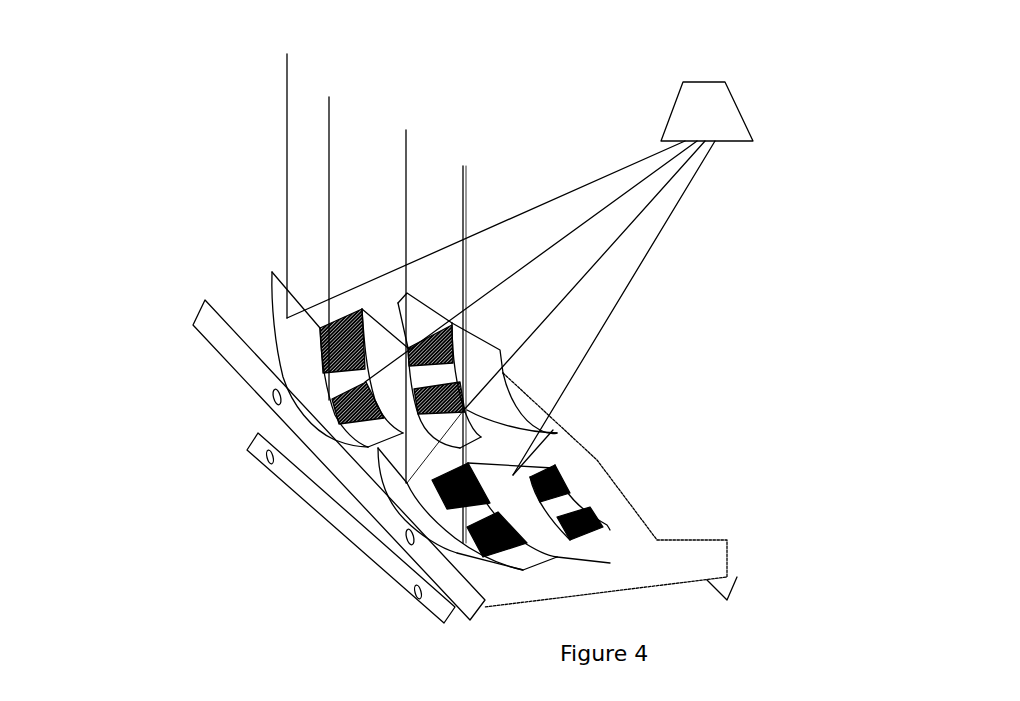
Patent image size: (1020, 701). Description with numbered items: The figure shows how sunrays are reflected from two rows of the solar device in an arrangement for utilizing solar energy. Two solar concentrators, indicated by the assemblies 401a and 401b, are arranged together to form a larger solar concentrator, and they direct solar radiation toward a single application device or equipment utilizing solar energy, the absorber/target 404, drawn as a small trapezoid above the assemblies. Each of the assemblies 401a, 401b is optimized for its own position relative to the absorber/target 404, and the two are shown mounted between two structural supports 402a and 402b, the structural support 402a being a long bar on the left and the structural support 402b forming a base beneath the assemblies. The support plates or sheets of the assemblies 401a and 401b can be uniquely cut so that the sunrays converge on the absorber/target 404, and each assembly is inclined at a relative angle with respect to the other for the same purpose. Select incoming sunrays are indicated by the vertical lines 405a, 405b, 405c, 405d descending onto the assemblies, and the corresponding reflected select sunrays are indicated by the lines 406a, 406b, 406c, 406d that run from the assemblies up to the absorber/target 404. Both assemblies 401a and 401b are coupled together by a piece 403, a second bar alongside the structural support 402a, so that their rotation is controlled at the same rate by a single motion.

The solar concentrator assembly 401a is at (570, 528).
The solar concentrator assembly 401b is at (417, 388).
The structural support 402a is at (230, 347).
The structural support 402b is at (568, 446).
The coupling piece 403 is at (358, 537).
The absorber/target 404 is at (717, 115).
The incoming sunray 405a is at (286, 80).
The incoming sunray 405b is at (328, 132).
The incoming sunray 405c is at (405, 183).
The incoming sunray 405d is at (462, 228).
The reflected sunray 406a is at (662, 155).
The reflected sunray 406b is at (650, 188).
The reflected sunray 406c is at (633, 216).
The reflected sunray 406d is at (650, 248).